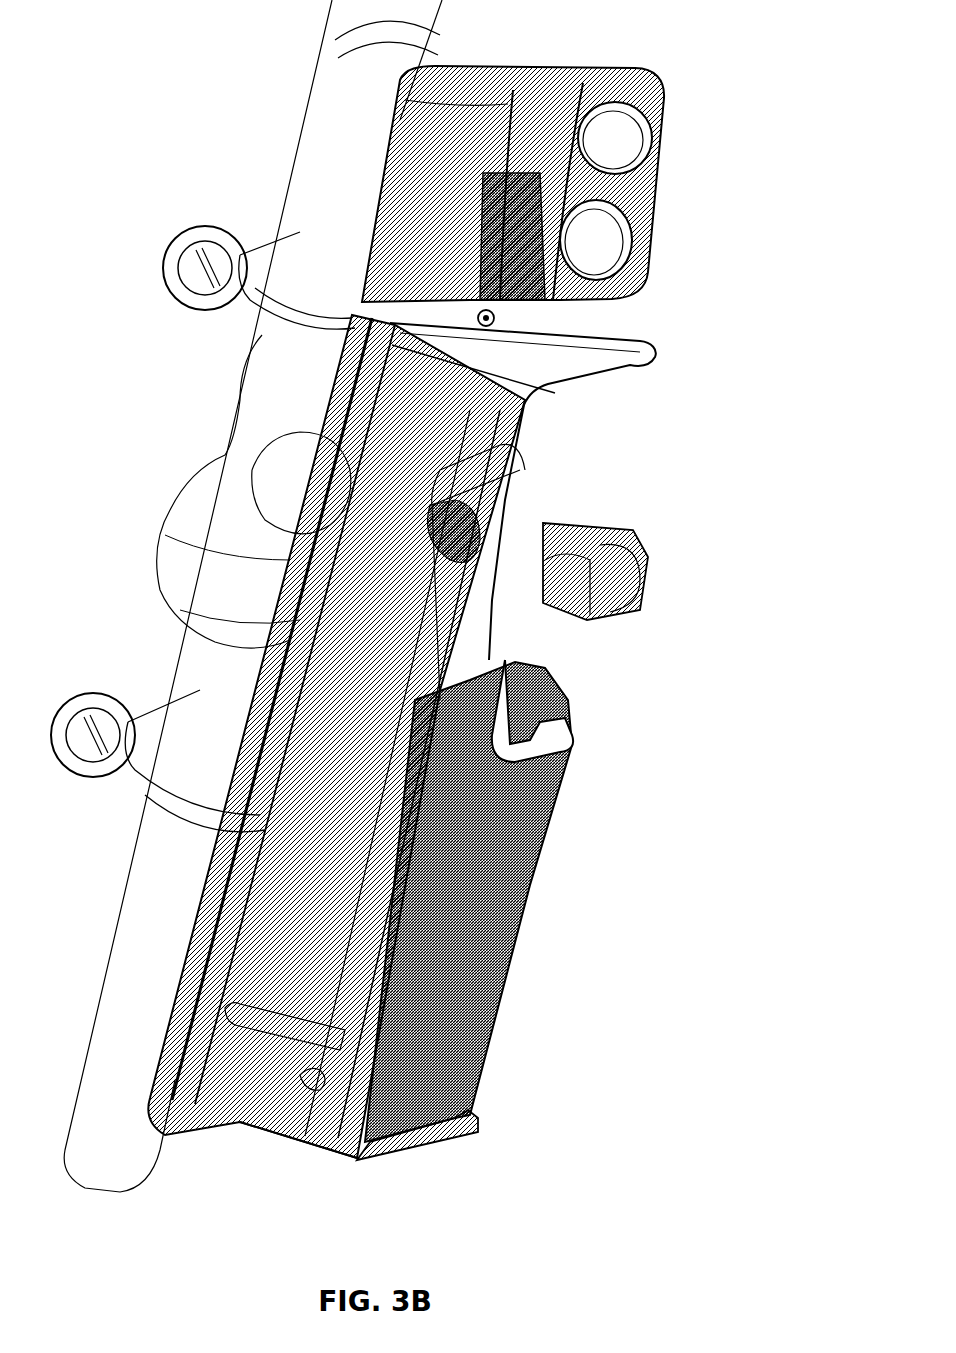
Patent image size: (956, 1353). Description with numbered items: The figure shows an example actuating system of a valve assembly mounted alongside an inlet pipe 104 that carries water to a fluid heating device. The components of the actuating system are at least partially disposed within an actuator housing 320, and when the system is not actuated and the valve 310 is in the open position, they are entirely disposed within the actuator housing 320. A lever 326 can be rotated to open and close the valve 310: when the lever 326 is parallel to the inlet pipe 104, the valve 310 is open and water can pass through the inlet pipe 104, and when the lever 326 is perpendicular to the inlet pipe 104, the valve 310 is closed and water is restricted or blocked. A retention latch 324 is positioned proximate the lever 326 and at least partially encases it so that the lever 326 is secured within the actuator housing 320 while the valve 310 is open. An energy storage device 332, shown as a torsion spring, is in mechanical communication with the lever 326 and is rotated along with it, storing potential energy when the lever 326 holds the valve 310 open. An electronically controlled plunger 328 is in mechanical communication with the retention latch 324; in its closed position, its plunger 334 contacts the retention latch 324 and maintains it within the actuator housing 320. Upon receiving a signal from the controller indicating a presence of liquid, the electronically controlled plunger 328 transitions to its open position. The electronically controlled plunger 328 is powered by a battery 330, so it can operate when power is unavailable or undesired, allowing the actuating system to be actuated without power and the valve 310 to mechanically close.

The inlet pipe 104 is at (298, 181).
The valve 310 is at (258, 470).
The actuator housing 320 is at (250, 690).
The retention latch 324 is at (665, 370).
The lever 326 is at (530, 887).
The electronically controlled plunger 328 is at (480, 186).
The battery 330 is at (652, 187).
The energy storage device 332 is at (592, 522).
The plunger 334 is at (494, 322).